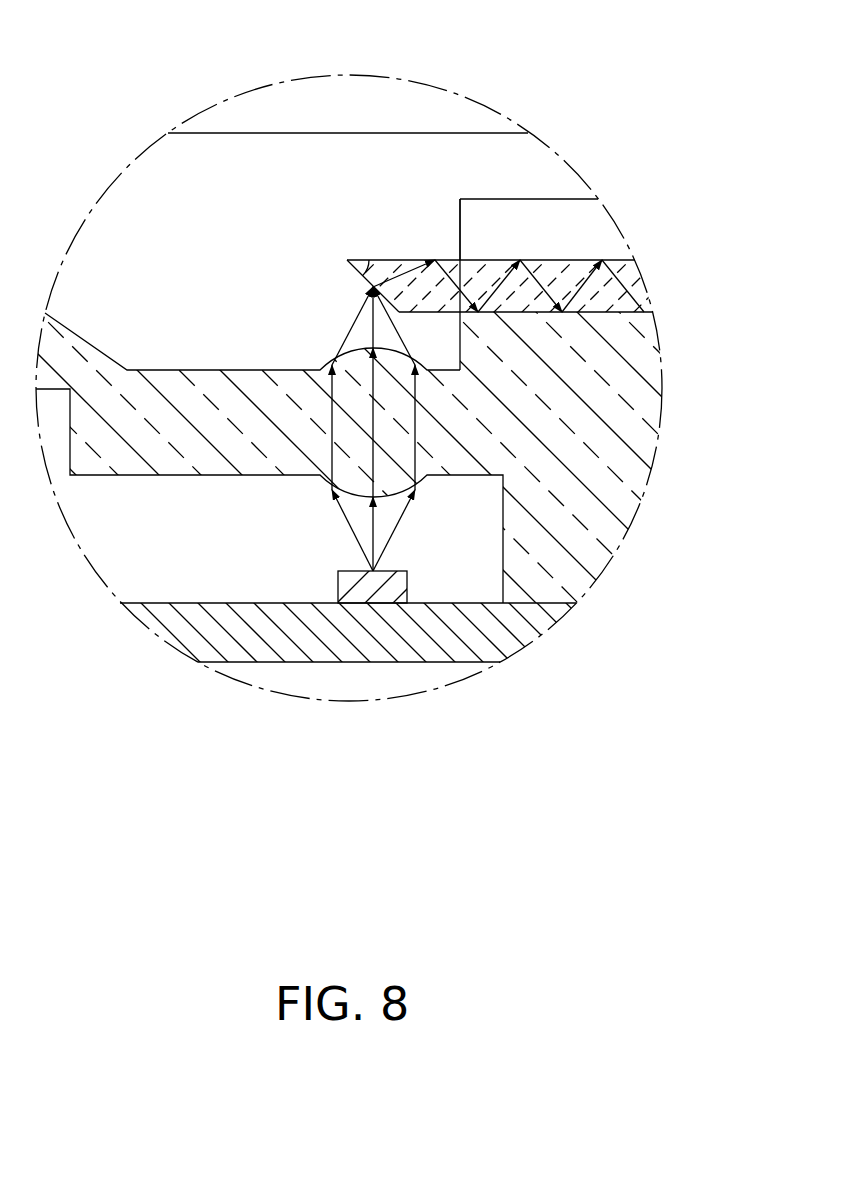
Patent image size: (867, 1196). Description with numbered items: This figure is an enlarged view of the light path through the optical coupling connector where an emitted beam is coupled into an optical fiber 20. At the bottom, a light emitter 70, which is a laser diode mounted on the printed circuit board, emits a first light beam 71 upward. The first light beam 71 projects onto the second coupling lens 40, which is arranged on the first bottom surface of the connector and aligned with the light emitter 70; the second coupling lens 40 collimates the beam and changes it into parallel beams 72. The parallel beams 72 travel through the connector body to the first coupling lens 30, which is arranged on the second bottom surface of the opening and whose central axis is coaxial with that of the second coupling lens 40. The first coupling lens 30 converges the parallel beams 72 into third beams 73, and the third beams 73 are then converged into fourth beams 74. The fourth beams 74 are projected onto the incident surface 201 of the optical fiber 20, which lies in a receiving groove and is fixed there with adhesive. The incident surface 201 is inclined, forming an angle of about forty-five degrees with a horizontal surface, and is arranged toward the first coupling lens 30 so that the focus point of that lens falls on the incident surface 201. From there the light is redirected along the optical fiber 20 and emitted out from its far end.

The optical fiber 20 is at (568, 272).
The incident surface 201 is at (368, 280).
The first coupling lens 30 is at (357, 363).
The second coupling lens 40 is at (333, 490).
The light emitter 70 is at (372, 592).
The first light beam 71 is at (398, 522).
The parallel beams 72 is at (420, 424).
The third beams 73 is at (403, 337).
The fourth beams 74 is at (388, 280).